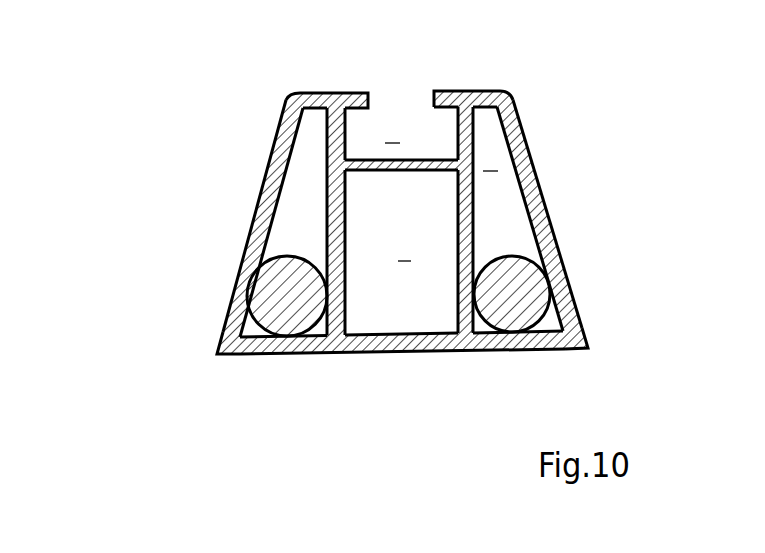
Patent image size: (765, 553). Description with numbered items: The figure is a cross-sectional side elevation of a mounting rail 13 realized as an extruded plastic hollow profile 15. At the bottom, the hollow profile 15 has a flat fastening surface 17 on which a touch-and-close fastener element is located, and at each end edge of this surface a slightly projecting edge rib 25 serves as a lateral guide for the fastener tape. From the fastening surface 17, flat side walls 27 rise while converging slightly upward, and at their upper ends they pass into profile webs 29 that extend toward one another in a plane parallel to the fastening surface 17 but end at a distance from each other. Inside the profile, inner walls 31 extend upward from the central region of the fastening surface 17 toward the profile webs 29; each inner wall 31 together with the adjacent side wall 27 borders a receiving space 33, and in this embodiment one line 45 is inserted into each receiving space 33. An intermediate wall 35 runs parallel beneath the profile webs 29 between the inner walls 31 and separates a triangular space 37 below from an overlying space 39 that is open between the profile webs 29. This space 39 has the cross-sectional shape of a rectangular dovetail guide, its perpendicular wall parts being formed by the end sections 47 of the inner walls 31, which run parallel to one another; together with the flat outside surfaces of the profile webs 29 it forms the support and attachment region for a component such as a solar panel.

The mounting rail 13 is at (344, 214).
The hollow profile 15 is at (499, 90).
The fastening surface 17 is at (340, 352).
The edge rib 25 is at (218, 356).
The side wall 27 is at (553, 226).
The profile web 29 is at (323, 95).
The inner wall 31 is at (343, 222).
The receiving space 33 is at (290, 224).
The intermediate wall 35 is at (375, 170).
The triangular space 37 is at (404, 262).
The space open at the top 39 is at (392, 143).
The line 45 is at (290, 302).
The end section of the inside wall 47 is at (328, 127).